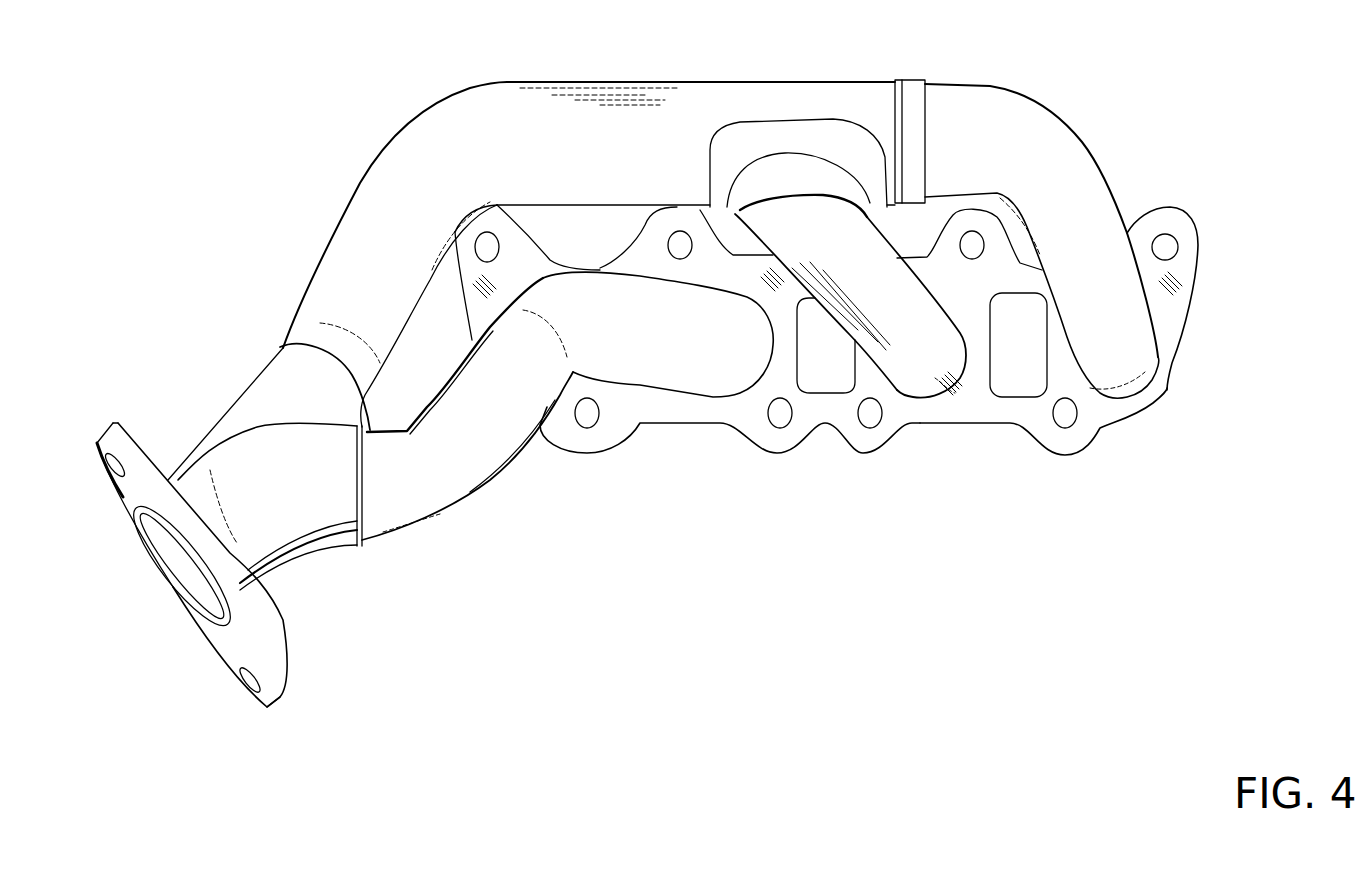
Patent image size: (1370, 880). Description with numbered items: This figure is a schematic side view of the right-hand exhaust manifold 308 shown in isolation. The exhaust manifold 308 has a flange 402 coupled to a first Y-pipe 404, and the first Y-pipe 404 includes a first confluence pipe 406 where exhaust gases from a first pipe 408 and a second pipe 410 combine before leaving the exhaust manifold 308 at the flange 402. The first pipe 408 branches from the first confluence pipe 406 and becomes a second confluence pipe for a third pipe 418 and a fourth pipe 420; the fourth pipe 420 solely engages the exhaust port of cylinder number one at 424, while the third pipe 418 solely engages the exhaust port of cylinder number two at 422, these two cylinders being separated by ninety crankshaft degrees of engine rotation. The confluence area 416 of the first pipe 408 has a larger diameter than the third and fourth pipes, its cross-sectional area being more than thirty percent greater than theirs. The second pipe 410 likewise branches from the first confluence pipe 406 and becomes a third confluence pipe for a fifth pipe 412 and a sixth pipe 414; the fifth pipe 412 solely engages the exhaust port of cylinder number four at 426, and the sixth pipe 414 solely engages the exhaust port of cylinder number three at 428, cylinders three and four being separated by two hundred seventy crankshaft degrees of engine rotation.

The right-hand exhaust manifold 308 is at (280, 688).
The flange 402 is at (213, 647).
The first Y-pipe 404 is at (260, 423).
The first confluence pipe 406 is at (168, 480).
The first pipe 408 is at (361, 182).
The second pipe 410 is at (474, 488).
The fifth pipe 412 is at (522, 445).
The sixth pipe 414 is at (710, 398).
The confluence area 416 is at (702, 82).
The third pipe 418 is at (912, 259).
The fourth pipe 420 is at (1083, 143).
The exhaust port engagement location of cylinder number two 422 is at (943, 393).
The exhaust port engagement location of cylinder number one 424 is at (1156, 359).
The exhaust port engagement location of cylinder number four 426 is at (547, 278).
The exhaust port engagement location of cylinder number three 428 is at (755, 293).